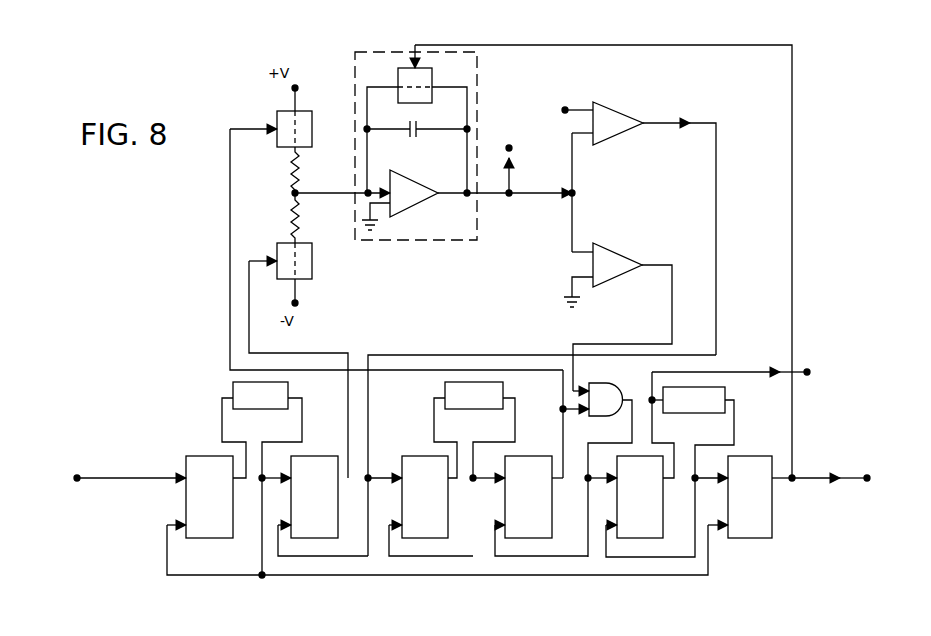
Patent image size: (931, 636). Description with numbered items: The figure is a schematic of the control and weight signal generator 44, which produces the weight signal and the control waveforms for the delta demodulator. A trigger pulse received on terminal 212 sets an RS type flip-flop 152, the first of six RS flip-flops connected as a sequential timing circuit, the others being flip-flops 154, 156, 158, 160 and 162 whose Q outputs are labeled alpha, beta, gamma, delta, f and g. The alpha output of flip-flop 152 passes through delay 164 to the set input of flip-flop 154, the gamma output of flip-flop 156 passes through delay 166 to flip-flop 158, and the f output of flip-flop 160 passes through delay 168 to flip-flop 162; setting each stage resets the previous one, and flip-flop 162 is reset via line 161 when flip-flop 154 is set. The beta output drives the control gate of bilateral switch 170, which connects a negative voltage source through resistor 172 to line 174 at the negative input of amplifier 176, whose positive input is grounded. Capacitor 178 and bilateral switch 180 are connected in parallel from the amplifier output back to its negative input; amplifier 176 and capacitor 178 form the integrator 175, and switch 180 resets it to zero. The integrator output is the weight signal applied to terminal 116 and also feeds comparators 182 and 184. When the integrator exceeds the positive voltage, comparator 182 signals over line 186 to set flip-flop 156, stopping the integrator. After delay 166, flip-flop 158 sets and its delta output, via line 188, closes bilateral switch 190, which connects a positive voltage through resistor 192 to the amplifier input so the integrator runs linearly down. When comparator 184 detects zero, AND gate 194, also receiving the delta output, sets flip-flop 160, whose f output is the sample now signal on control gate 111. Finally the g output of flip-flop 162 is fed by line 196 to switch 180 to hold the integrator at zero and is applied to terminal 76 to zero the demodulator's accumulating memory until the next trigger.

The control and weight signal generator 44 is at (207, 98).
The terminal 76 is at (866, 476).
The control gate 111 is at (804, 375).
The terminal 116 is at (511, 150).
The RS type flip-flop 152 is at (186, 437).
The flip-flop 154 is at (302, 443).
The flip-flop 156 is at (428, 455).
The flip-flop 158 is at (516, 444).
The flip-flop 160 is at (663, 520).
The line 161 is at (498, 575).
The flip-flop 162 is at (744, 448).
The delay 164 is at (288, 386).
The delay 166 is at (503, 386).
The delay 168 is at (725, 389).
The bilateral switch 170 is at (312, 264).
The resistor 172 is at (286, 220).
The line 174 is at (326, 190).
The integrator 175 is at (416, 243).
The amplifier 176 is at (410, 178).
The capacitor 178 is at (413, 118).
The bilateral switch 180 is at (432, 80).
The comparator 182 is at (625, 135).
The comparator 184 is at (625, 275).
The line 186 is at (716, 167).
The line 188 is at (458, 355).
The bilateral switch 190 is at (312, 122).
The resistor 192 is at (286, 170).
The AND gate 194 is at (622, 385).
The line 196 is at (792, 172).
The terminal 212 is at (78, 481).